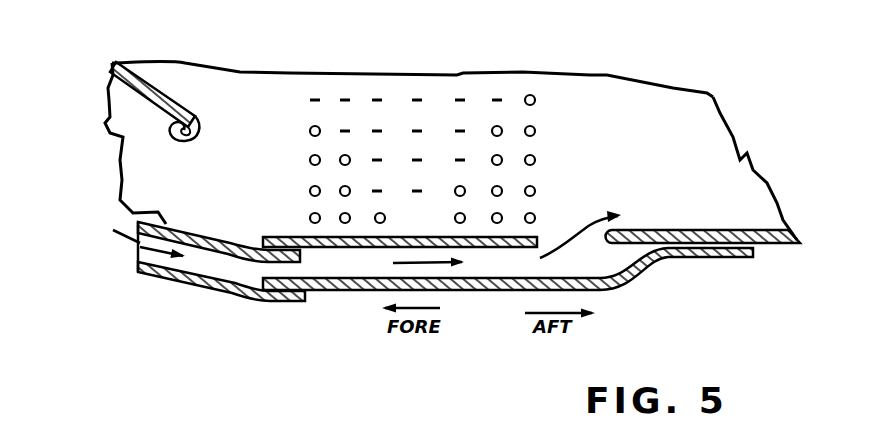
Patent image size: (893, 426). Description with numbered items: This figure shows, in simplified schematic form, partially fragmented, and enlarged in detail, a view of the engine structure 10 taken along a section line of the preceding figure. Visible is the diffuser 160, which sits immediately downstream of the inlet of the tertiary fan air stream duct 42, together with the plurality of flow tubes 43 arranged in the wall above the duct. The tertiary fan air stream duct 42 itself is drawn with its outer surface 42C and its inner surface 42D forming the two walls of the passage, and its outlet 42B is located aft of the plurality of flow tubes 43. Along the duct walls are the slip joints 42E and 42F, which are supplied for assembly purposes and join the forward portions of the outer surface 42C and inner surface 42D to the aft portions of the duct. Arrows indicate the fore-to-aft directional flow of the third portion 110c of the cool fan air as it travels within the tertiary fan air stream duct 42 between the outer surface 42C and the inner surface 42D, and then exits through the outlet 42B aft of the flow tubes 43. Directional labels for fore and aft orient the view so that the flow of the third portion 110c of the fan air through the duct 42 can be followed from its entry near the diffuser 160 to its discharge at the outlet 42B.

The combustor liner assembly 10 is at (530, 54).
The diffuser 160 is at (203, 130).
The flow tubes 43 is at (497, 186).
The outlet 42B is at (557, 233).
The third portion of the cool fan air 110c is at (583, 216).
The outer surface 42C is at (133, 212).
The inner surface 42D is at (174, 280).
The slip joint 42E is at (271, 238).
The slip joint 42F is at (280, 300).
The tertiary fan air stream duct 42 is at (228, 263).